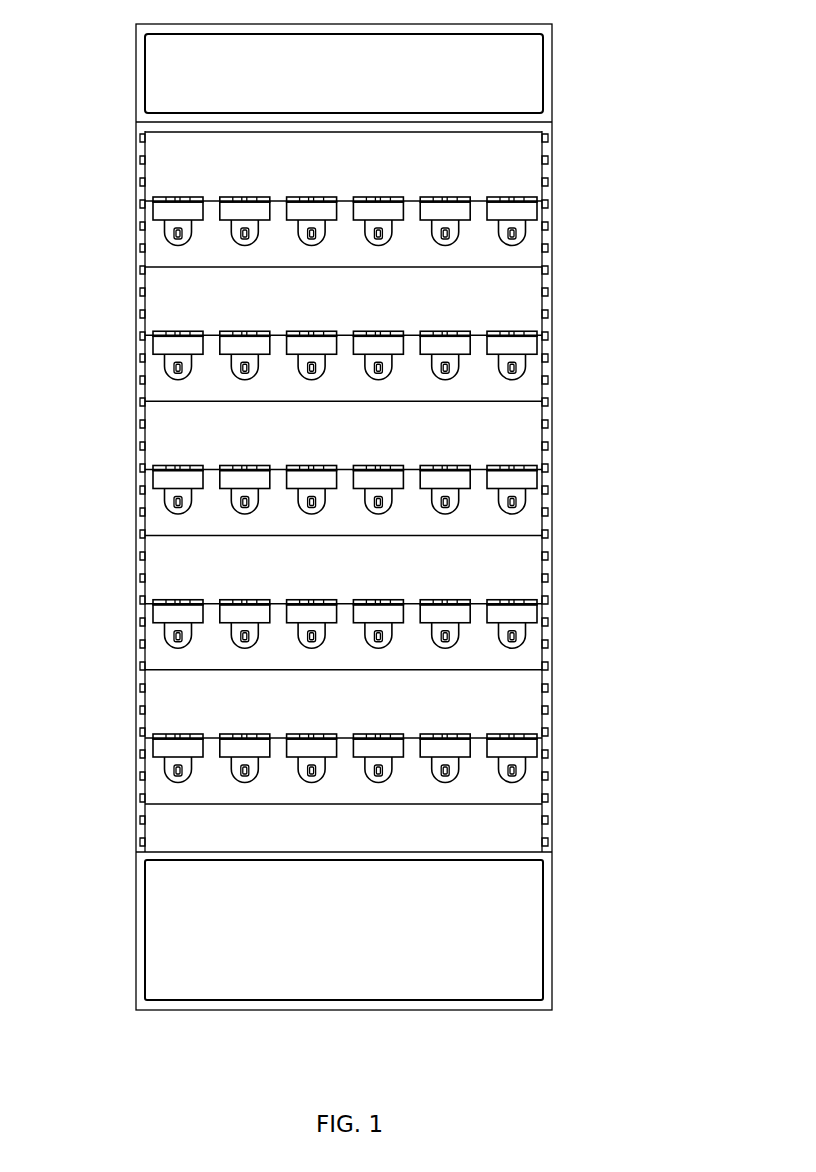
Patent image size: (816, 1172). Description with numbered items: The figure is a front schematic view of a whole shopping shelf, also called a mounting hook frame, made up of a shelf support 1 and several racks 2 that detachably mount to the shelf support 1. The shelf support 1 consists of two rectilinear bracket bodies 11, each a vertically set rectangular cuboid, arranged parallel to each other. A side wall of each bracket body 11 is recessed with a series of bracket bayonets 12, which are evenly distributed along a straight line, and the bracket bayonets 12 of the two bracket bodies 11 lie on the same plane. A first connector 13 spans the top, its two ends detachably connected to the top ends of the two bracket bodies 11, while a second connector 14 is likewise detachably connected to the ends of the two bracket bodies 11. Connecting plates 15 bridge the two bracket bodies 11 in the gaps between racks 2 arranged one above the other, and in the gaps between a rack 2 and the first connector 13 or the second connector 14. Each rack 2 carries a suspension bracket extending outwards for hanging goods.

The shelf support 1 is at (303, 517).
The rack 2 is at (530, 240).
The bracket body 11 is at (552, 307).
The bracket bayonet 12 is at (548, 449).
The first connector 13 is at (157, 82).
The second connector 14 is at (157, 945).
The connecting plate 15 is at (299, 480).